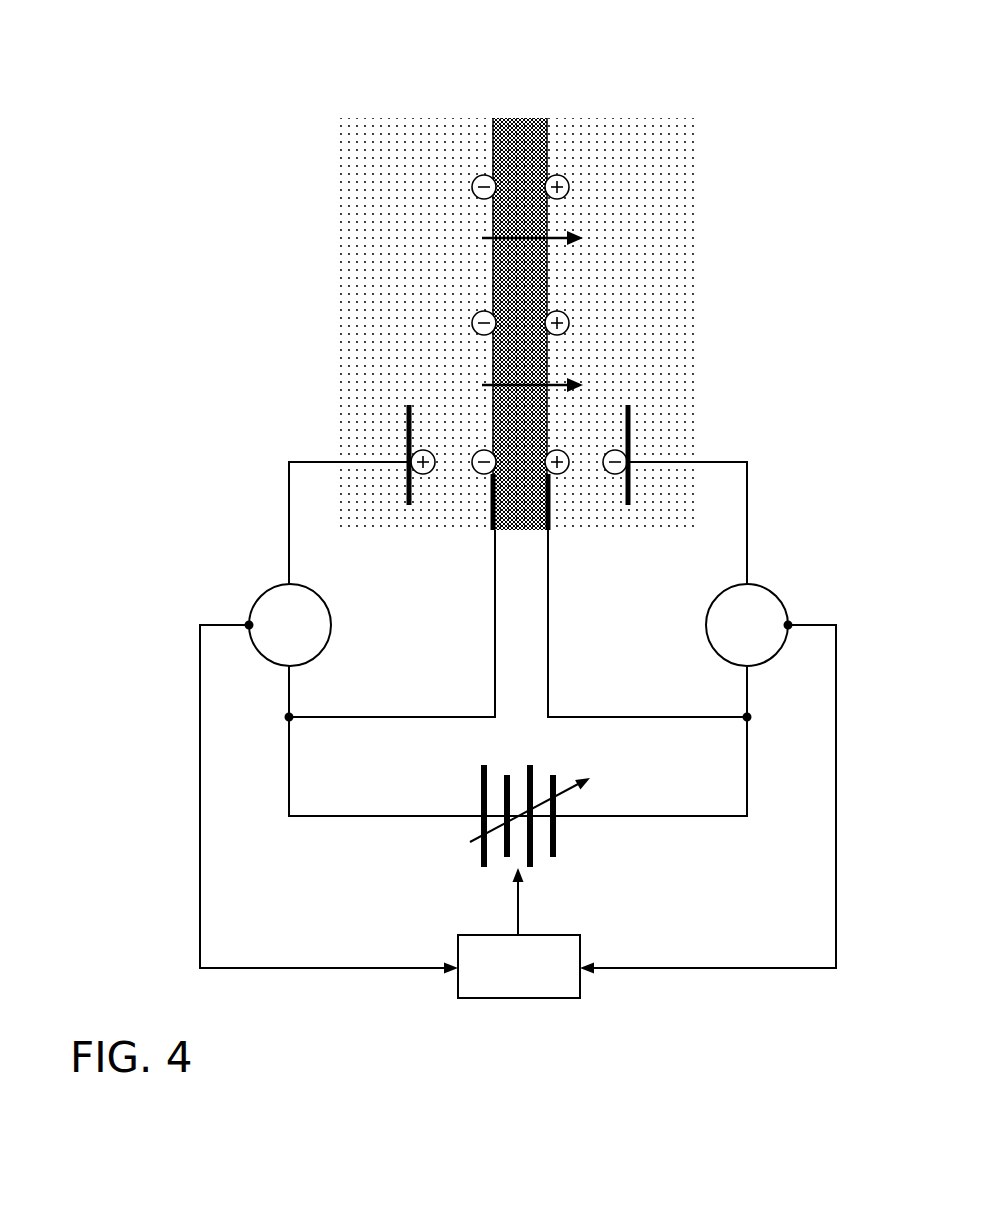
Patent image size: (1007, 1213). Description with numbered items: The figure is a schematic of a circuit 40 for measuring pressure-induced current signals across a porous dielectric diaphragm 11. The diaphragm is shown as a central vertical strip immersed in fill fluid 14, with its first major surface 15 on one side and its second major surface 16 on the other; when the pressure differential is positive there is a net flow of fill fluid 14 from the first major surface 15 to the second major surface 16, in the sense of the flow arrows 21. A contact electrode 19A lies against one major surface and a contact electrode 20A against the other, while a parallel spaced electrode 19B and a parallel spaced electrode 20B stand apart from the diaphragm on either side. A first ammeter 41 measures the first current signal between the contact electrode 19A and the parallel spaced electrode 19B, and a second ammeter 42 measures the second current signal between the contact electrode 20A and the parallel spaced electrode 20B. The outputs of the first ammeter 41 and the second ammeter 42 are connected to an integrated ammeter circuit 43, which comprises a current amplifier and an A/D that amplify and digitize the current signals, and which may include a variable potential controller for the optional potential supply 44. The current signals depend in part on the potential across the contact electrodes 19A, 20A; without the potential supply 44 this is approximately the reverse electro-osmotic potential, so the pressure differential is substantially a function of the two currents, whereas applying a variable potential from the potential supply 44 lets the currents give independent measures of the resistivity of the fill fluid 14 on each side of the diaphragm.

The circuit 40 is at (139, 111).
The porous dielectric diaphragm 11 is at (527, 147).
The fill fluid 14 is at (650, 214).
The first major surface 15 is at (482, 148).
The second major surface 16 is at (558, 148).
The flow arrows 21 is at (510, 310).
The contact electrode 19A is at (491, 513).
The parallel spaced electrode 19B is at (407, 430).
The contact electrode 20A is at (550, 513).
The parallel spaced electrode 20B is at (630, 430).
The first ammeter 41 is at (262, 594).
The second ammeter 42 is at (777, 594).
The integrated ammeter circuit 43 is at (583, 942).
The potential supply 44 is at (462, 858).